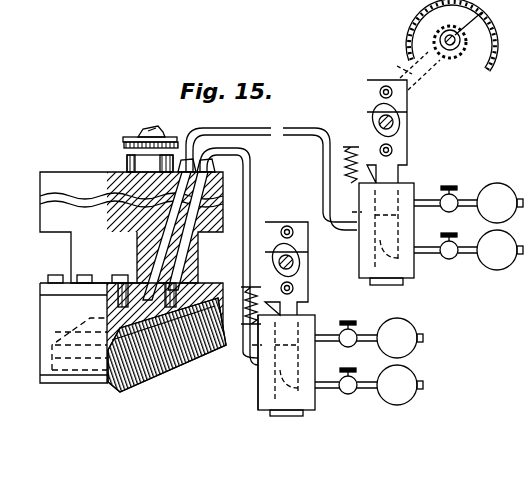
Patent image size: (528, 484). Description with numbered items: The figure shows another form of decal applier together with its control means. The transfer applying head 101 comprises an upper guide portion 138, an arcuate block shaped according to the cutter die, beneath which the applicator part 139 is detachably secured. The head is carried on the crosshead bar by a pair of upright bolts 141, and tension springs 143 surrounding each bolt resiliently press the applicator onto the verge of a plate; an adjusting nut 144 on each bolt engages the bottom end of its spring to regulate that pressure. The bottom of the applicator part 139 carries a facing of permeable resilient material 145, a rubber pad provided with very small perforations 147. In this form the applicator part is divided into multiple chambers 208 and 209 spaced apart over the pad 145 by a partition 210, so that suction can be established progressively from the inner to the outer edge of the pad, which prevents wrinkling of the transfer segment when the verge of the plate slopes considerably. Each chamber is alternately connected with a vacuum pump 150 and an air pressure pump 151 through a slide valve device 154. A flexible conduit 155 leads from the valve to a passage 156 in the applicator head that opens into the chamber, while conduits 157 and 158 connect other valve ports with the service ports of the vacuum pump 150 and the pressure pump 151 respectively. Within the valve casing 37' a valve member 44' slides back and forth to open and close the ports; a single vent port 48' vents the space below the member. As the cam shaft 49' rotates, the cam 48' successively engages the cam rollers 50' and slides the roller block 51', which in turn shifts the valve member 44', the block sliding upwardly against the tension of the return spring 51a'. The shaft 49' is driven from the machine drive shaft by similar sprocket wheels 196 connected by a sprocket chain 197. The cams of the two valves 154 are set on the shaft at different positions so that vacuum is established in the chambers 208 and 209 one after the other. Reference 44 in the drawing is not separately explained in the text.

The transfer applying head 101 is at (100, 178).
The upper guide portion 138 is at (52, 196).
The applicator part 139 is at (43, 317).
The upright bolts 141 is at (143, 130).
The tension springs 143 is at (125, 138).
The adjusting nut 144 is at (126, 150).
The permeable resilient material 145 is at (110, 383).
The perforations 147 is at (165, 380).
The slide valve device 154 is at (424, 181).
The flexible conduit 155 is at (262, 143).
The passage 156 is at (140, 248).
The conduit 157 is at (462, 200).
The conduit 158 is at (470, 254).
The vacuum pump 150 is at (412, 340).
The air pressure pump 151 is at (494, 270).
The sprocket wheels 196 is at (430, 22).
The sprocket chain 197 is at (422, 45).
The chamber 208 is at (105, 352).
The chamber 209 is at (200, 360).
The partition 210 is at (125, 383).
The valve casing 37' is at (234, 376).
The valve passage 44 is at (392, 208).
The valve member 44' is at (301, 362).
The cam 48' is at (355, 188).
The cam shaft 49' is at (371, 169).
The cam rollers 50' is at (358, 194).
The roller block 51' is at (274, 260).
The return spring 51a' is at (366, 131).